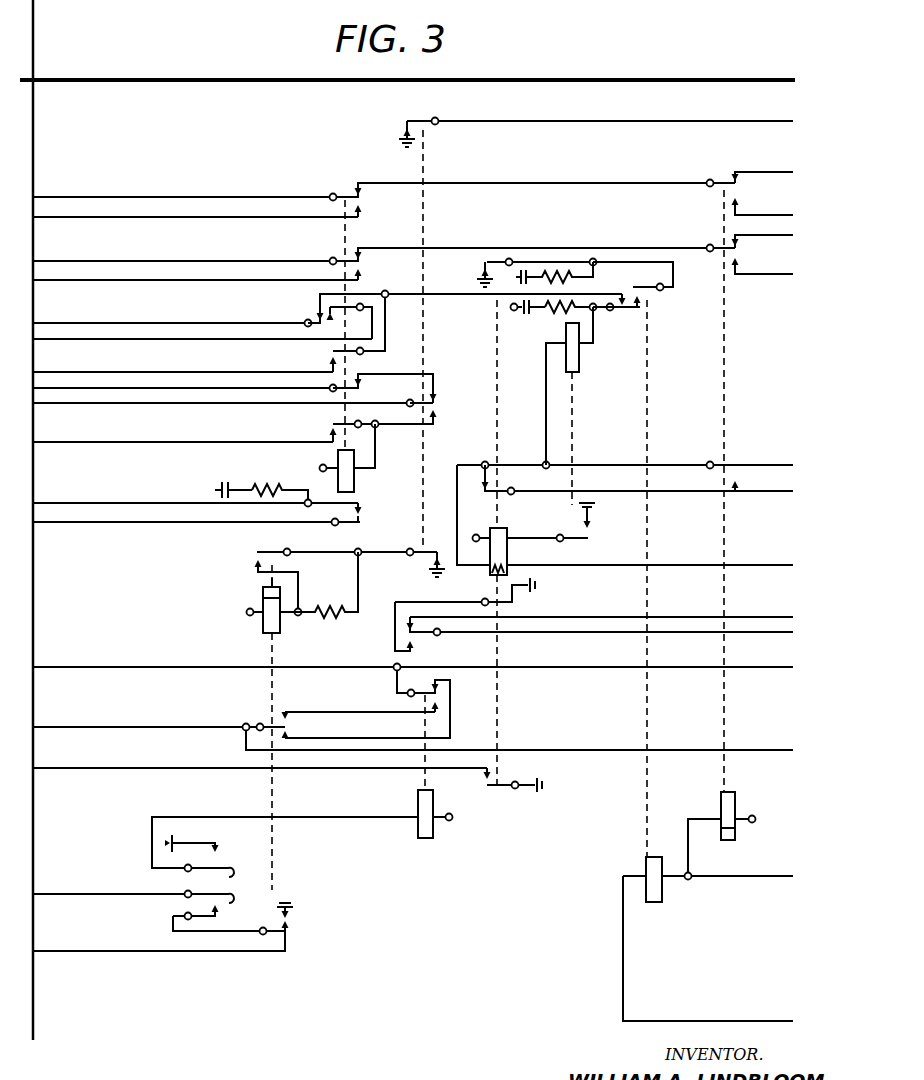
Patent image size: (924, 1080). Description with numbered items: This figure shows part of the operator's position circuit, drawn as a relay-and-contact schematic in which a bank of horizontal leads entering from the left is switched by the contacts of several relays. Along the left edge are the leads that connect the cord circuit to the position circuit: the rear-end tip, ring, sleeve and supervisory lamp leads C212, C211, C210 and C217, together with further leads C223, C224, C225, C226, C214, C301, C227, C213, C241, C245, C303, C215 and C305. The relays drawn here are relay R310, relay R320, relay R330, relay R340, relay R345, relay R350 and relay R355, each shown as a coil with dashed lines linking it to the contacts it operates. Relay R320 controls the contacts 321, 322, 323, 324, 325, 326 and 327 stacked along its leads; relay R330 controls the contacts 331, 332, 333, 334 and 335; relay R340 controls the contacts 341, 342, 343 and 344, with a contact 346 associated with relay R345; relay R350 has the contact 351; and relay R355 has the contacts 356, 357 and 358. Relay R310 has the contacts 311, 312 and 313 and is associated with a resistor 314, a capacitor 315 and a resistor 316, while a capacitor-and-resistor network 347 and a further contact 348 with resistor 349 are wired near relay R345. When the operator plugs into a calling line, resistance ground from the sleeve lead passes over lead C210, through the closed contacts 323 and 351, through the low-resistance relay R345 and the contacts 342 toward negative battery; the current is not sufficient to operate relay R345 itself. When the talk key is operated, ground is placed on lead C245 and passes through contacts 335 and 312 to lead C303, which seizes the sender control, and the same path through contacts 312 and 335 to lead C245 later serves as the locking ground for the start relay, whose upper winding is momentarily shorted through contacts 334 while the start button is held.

The contact 311 is at (253, 556).
The contacts 312 is at (288, 728).
The contact of relay R310 313 is at (290, 935).
The resistor 314 is at (327, 585).
The capacitor 315 is at (244, 472).
The resistor 316 is at (266, 486).
The transfer contact of relay R320 321 is at (361, 198).
The transfer contact of relay R320 322 is at (361, 262).
The contacts 323 is at (317, 311).
The contact of relay R320 324 is at (331, 352).
The transfer contact of relay R320 325 is at (360, 389).
The contact of relay R320 326 is at (336, 431).
The contact of relay R320 327 is at (362, 521).
The contact of relay R330 331 is at (400, 123).
The contact of relay R330 332 is at (437, 406).
The contact of relay R330 to ground 333 is at (428, 565).
The contacts 334 is at (423, 645).
The contacts 335 is at (445, 694).
The contact of relay R340 341 is at (483, 266).
The contacts 342 is at (490, 480).
The contact of relay R340 343 is at (515, 605).
The contact of relay R340 344 is at (484, 782).
The contact of relay R345 346 is at (589, 533).
The resistor-capacitor network 347 is at (566, 283).
The capacitor contact 348 is at (512, 309).
The resistor 349 is at (556, 312).
The contacts 351 is at (643, 298).
The transfer contact of relay R355 356 is at (740, 190).
The transfer contact of relay R355 357 is at (740, 253).
The contact of relay R355 358 is at (738, 479).
The relay R310 is at (282, 628).
The relay R320 is at (356, 478).
The relay R330 is at (437, 830).
The relay R340 is at (512, 553).
The relay R345 is at (581, 357).
The relay R350 is at (664, 897).
The relay R355 is at (735, 786).
The lead C210 is at (111, 316).
The lead C211 is at (111, 254).
The lead C212 is at (111, 190).
The conductor C213 is at (111, 496).
The conductor C214 is at (111, 382).
The conductor C215 is at (111, 887).
The lead C217 is at (111, 761).
The conductor C223 is at (111, 210).
The conductor C224 is at (111, 274).
The conductor C225 is at (111, 333).
The conductor C226 is at (111, 365).
The conductor C227 is at (111, 435).
The conductor C241 is at (111, 516).
The lead C245 is at (111, 660).
The conductor C301 is at (111, 398).
The lead C303 is at (111, 720).
The conductor C305 is at (111, 944).